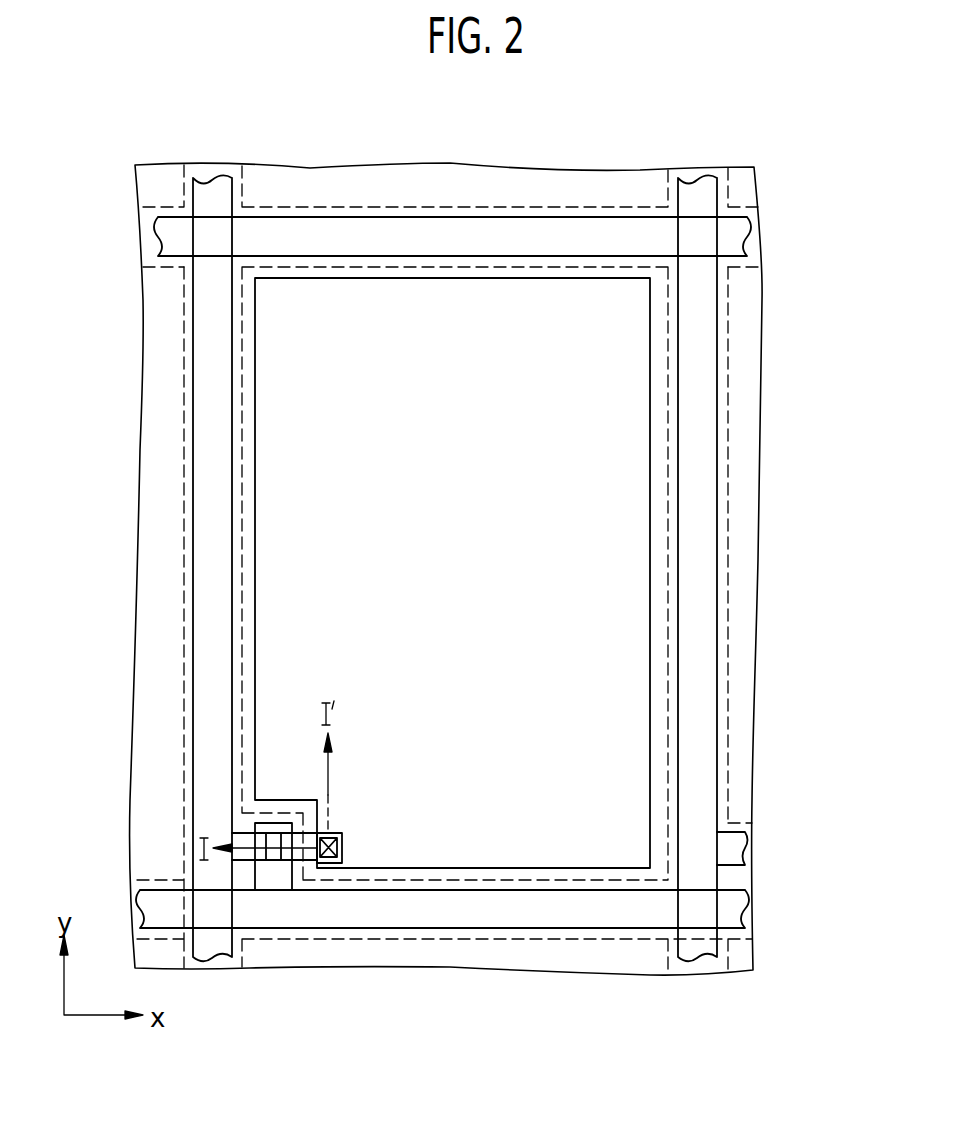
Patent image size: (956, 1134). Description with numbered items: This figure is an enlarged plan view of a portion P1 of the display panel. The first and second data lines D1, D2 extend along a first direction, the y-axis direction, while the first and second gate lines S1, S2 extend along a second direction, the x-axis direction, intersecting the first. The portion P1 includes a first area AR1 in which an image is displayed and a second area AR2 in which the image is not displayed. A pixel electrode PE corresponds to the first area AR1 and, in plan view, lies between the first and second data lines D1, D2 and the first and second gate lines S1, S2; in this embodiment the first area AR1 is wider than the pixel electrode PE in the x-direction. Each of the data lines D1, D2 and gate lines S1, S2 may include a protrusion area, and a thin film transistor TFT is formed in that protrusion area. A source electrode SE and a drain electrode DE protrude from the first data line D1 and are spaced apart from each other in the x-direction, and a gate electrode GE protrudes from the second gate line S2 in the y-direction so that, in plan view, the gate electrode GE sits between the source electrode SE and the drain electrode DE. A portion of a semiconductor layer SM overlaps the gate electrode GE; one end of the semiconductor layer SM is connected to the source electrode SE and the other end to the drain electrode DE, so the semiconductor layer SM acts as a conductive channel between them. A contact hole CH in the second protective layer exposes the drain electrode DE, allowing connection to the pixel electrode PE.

The portion of the display panel P1 is at (762, 111).
The first gate line S1 is at (457, 243).
The second gate line S2 is at (485, 918).
The first data line D1 is at (212, 722).
The second data line D2 is at (702, 682).
The pixel electrode PE is at (650, 587).
The first area AR1 is at (583, 273).
The second area AR2 is at (525, 210).
The thin film transistor TFT is at (276, 950).
The gate electrode GE is at (265, 860).
The source electrode SE is at (238, 856).
The drain electrode DE is at (300, 857).
The semiconductor layer SM is at (280, 858).
The contact hole CH is at (342, 848).